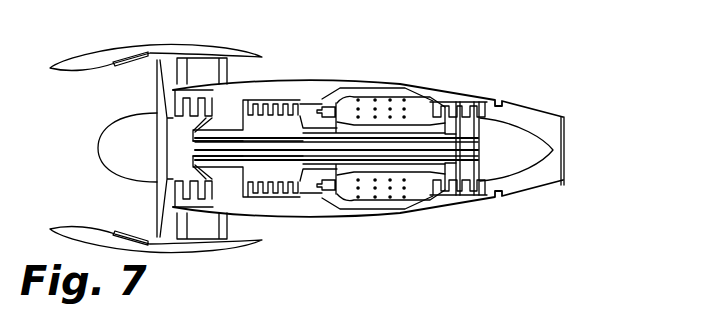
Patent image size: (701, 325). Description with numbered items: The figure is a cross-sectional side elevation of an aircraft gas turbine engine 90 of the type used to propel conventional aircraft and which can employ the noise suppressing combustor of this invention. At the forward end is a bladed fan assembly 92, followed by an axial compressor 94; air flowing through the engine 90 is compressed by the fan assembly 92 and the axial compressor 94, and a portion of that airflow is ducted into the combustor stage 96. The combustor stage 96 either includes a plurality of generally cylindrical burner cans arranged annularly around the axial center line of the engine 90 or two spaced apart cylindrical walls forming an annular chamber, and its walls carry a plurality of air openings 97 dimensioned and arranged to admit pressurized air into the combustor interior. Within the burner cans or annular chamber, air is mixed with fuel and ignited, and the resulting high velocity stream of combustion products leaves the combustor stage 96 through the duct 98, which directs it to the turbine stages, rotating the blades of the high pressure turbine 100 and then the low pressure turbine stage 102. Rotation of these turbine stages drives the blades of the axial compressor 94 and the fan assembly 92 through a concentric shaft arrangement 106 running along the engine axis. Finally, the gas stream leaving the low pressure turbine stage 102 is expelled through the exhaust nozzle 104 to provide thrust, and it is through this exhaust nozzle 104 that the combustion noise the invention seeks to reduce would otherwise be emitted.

The gas turbine engine 90 is at (320, 60).
The bladed fan assembly 92 is at (203, 196).
The axial compressor 94 is at (278, 168).
The combustor stage 96 is at (380, 101).
The air openings 97 is at (357, 102).
The duct 98 is at (433, 110).
The high pressure turbine 100 is at (455, 101).
The low pressure turbine stage 102 is at (503, 103).
The exhaust nozzle 104 is at (560, 147).
The concentric shaft arrangement 106 is at (433, 188).